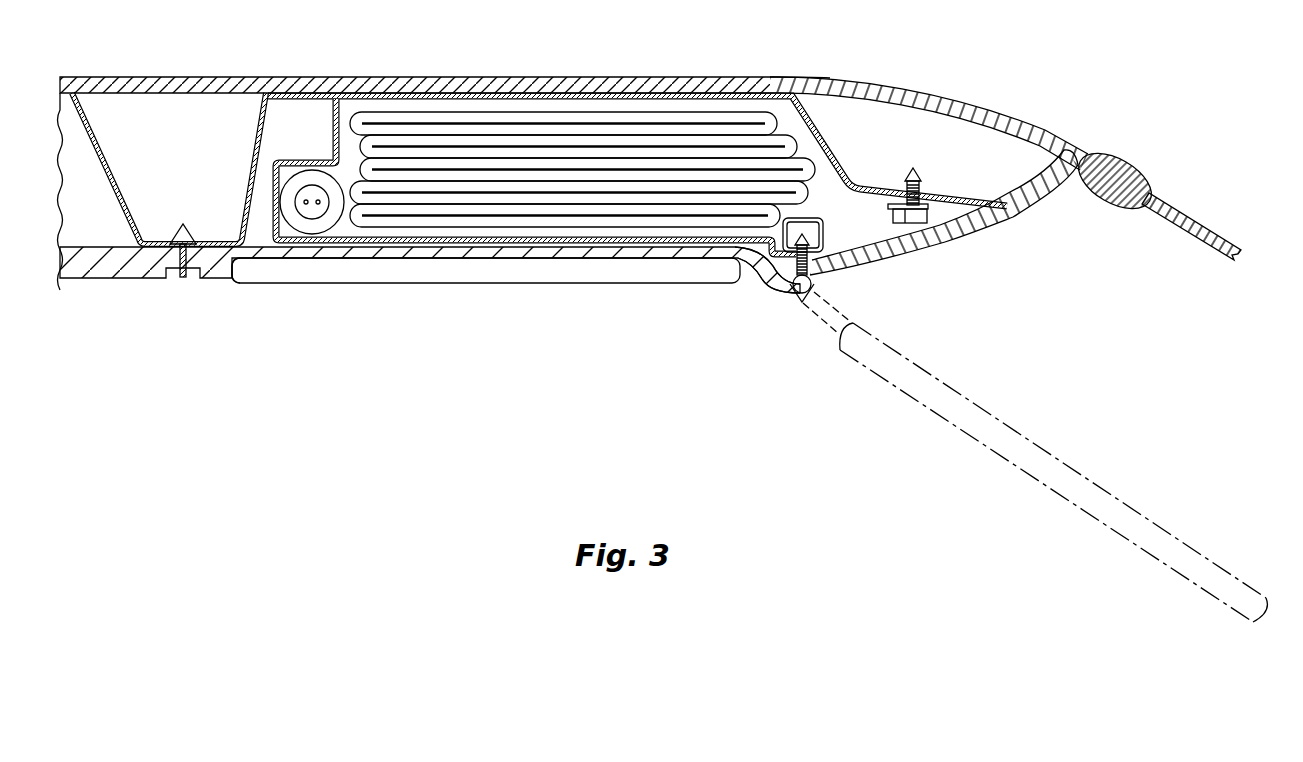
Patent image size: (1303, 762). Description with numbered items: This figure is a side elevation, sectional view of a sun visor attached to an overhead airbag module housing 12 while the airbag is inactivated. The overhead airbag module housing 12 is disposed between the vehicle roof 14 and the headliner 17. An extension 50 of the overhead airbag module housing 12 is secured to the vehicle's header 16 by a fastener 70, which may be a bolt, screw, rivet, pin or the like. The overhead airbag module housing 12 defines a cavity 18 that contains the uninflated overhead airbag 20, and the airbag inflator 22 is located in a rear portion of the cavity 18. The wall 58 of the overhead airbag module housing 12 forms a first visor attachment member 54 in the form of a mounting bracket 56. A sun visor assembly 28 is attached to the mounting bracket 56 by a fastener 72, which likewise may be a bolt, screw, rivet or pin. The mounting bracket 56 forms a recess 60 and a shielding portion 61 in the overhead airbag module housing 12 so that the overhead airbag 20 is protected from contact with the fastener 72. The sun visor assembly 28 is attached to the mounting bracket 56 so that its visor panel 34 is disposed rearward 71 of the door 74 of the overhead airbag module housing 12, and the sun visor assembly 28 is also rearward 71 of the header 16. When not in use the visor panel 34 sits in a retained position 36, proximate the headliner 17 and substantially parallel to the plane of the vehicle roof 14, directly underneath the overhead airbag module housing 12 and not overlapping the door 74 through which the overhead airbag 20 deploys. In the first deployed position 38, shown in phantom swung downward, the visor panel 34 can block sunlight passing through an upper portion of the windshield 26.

The overhead airbag module housing 12 is at (776, 88).
The vehicle roof 14 is at (425, 78).
The header 16 is at (970, 130).
The headliner 17 is at (327, 253).
The cavity 18 is at (838, 140).
The overhead airbag 20 is at (590, 128).
The airbag inflator 22 is at (303, 183).
The windshield 26 is at (1193, 222).
The sun visor assembly 28 is at (763, 315).
The visor panel 34 is at (530, 280).
The retained position 36 is at (247, 283).
The first deployed position 38 is at (1012, 462).
The extension 50 is at (945, 215).
The first visor attachment member 54 is at (877, 283).
The mounting bracket 56 is at (858, 262).
The wall 58 is at (412, 250).
The recess 60 is at (757, 282).
The shielding portion 61 is at (803, 219).
The fastener 70 is at (905, 165).
The rearward 71 is at (378, 442).
The fastener 72 is at (782, 294).
The door 74 is at (948, 252).